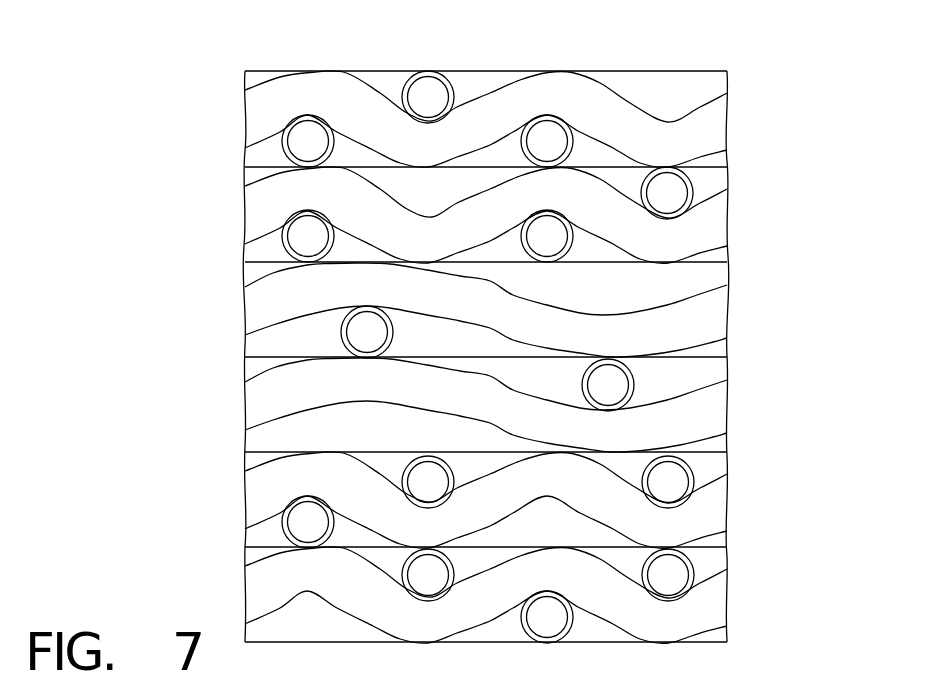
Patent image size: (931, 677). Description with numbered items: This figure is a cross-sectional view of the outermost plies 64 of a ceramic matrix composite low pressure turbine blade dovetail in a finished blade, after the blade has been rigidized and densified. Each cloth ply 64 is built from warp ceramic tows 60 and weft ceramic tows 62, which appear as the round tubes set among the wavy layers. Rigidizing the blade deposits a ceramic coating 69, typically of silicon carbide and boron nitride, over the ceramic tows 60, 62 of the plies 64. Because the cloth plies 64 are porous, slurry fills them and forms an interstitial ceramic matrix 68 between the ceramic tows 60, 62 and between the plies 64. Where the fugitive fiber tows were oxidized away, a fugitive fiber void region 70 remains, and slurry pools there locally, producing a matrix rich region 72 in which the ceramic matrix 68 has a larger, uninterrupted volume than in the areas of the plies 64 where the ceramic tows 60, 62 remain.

The warp ceramic tows 60 is at (420, 92).
The weft ceramic tows 62 is at (710, 232).
The outermost plies 64 is at (158, 72).
The interstitial ceramic matrix 68 is at (668, 383).
The ceramic coating 69 is at (443, 78).
The fugitive fiber void region 70 is at (665, 90).
The matrix rich region 72 is at (688, 88).